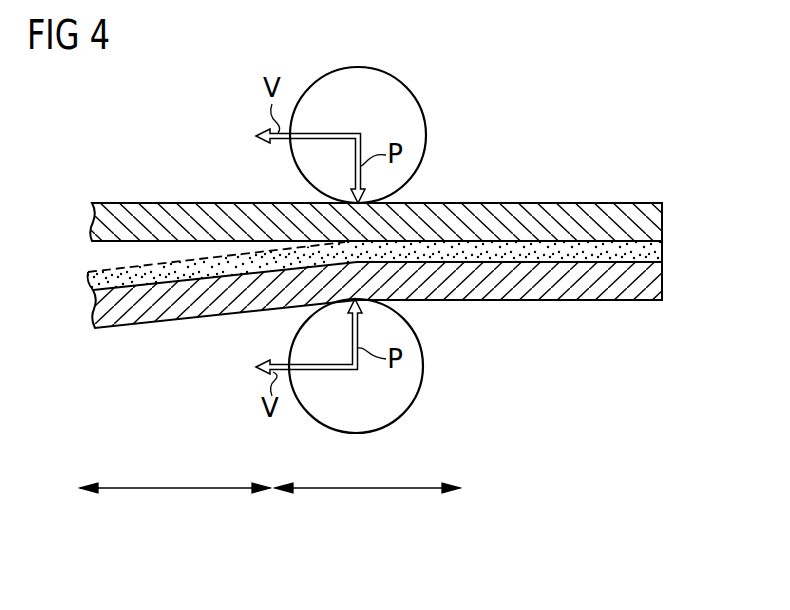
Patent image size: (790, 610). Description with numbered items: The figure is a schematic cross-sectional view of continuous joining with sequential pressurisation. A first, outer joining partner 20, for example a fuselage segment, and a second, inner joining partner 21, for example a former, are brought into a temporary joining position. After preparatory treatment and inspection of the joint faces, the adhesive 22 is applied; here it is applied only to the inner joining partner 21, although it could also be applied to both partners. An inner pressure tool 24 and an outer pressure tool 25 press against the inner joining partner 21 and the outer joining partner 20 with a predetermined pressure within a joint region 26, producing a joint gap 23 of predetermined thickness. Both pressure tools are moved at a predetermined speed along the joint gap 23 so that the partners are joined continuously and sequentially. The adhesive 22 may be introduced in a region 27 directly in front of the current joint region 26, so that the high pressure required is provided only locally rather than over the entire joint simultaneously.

The outer joining partner 20 is at (529, 203).
The inner joining partner 21 is at (530, 300).
The adhesive 22 is at (90, 276).
The joint gap 23 is at (662, 253).
The inner pressure tool 24 is at (420, 395).
The outer pressure tool 25 is at (405, 88).
The joint region 26 is at (367, 476).
The region in front of the joint region 27 is at (175, 476).